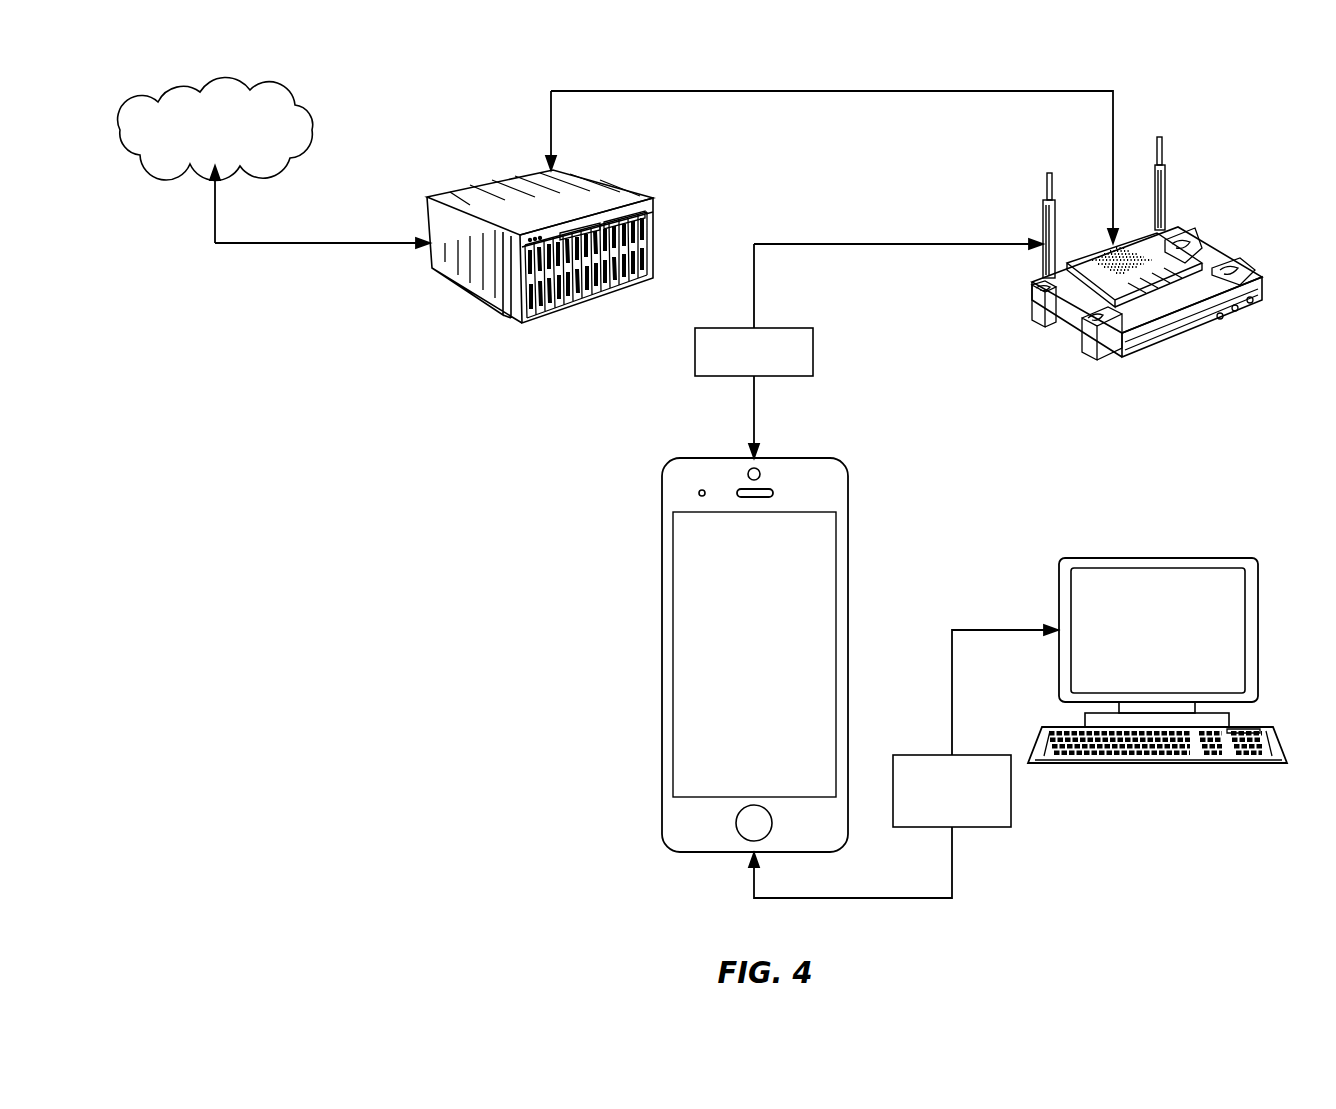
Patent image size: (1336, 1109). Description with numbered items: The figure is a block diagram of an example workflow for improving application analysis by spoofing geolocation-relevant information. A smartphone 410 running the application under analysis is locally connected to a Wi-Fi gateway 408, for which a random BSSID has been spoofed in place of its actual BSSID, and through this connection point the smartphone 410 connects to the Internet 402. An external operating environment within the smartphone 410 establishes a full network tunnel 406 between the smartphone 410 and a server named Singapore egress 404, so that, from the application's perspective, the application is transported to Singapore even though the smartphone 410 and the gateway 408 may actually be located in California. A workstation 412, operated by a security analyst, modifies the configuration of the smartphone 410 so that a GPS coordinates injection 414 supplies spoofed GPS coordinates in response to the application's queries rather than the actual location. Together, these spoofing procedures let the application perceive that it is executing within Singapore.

The Internet 402 is at (178, 94).
The Singapore egress 404 is at (578, 191).
The full network tunnel 406 is at (813, 350).
The Wi-Fi gateway 408 is at (1208, 252).
The smartphone 410 is at (662, 655).
The workstation 412 is at (1158, 556).
The GPS coordinates injection 414 is at (1011, 790).